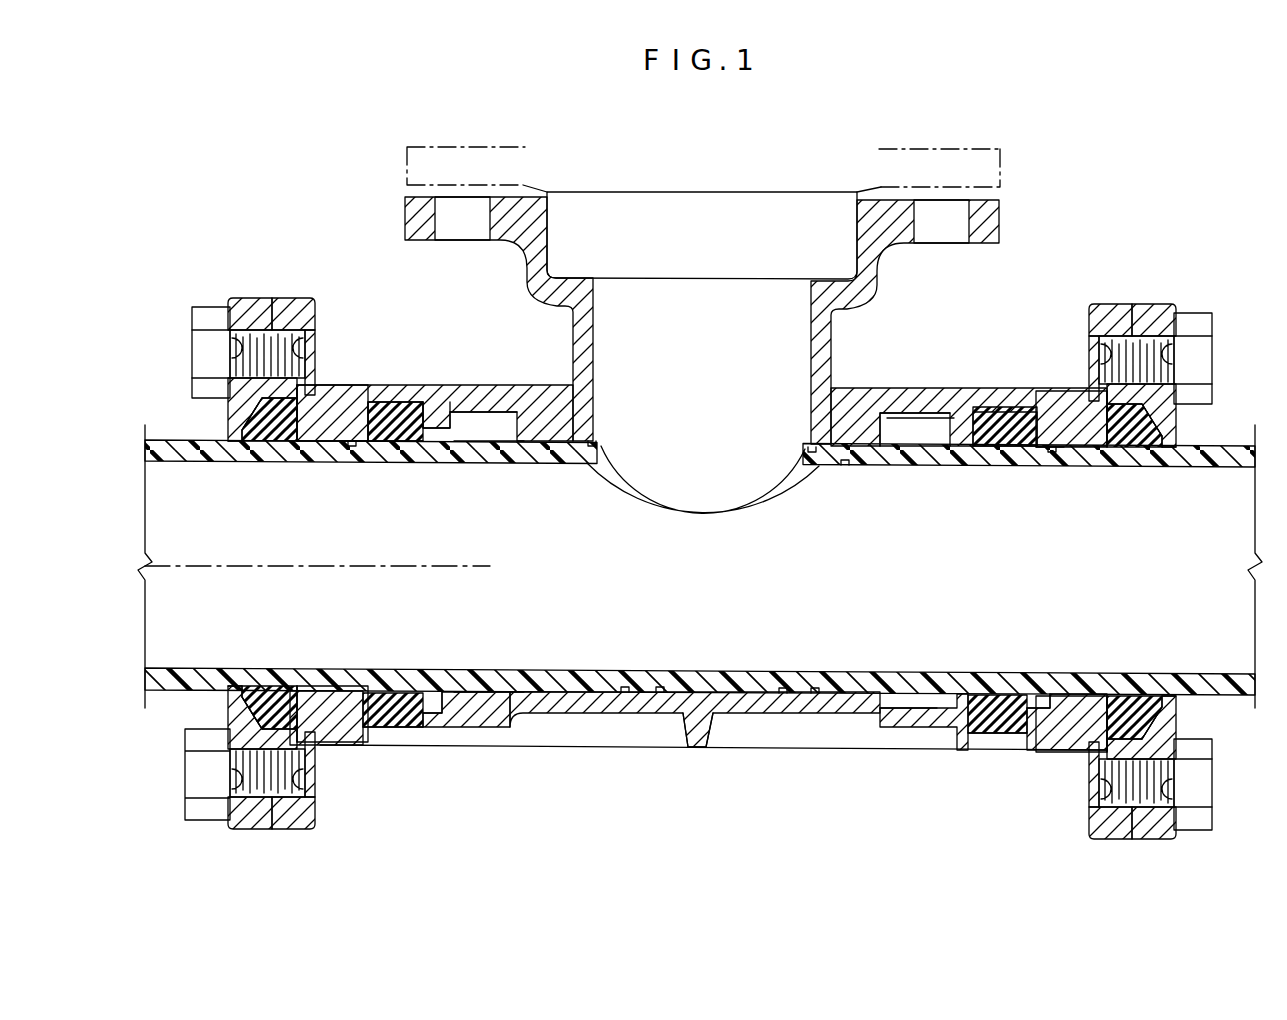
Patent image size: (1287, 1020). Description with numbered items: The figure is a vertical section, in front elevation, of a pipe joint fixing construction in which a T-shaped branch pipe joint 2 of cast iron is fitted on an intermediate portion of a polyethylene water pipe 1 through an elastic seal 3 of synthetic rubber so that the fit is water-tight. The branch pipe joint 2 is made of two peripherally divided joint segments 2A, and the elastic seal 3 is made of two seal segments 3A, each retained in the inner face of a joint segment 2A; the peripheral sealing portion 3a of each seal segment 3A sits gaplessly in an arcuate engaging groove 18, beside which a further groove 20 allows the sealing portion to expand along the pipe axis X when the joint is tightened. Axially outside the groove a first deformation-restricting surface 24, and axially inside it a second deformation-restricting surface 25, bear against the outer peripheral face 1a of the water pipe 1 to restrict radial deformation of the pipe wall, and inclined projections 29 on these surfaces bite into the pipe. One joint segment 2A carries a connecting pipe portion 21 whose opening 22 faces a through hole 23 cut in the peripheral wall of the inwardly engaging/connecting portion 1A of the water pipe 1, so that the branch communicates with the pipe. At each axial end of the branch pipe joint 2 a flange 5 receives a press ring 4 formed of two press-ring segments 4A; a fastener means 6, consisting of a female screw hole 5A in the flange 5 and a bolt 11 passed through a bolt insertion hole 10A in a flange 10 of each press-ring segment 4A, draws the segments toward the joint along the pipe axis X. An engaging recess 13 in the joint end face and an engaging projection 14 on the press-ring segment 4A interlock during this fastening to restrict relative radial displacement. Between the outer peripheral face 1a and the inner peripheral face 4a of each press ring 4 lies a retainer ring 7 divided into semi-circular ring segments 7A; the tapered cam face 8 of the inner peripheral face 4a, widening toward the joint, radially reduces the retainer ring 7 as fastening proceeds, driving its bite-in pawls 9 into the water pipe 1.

The water pipe 1 is at (1245, 446).
The outer peripheral face 1a is at (937, 445).
The inwardly engaging/connecting portion 1A is at (695, 645).
The branch pipe joint 2 is at (702, 545).
The joint segment 2A is at (698, 578).
The elastic seal 3 is at (709, 554).
The seal segment 3A is at (709, 554).
The peripheral sealing portion 3a is at (432, 420).
The press ring 4 is at (711, 543).
The press-ring segment 4A is at (233, 298).
The inner peripheral face 4a is at (258, 450).
The flange 5 is at (702, 551).
The female screw hole 5A is at (308, 340).
The fastener means 6 is at (706, 554).
The retainer ring 7 is at (744, 568).
The ring segment 7A is at (744, 568).
The cam face 8 is at (265, 445).
The bite-in ridges or pawls 9 is at (278, 445).
The flange 10 is at (706, 554).
The bolt insertion hole 10A is at (245, 340).
The bolt 11 is at (190, 386).
The engaging recess 13 is at (287, 440).
The engaging projection 14 is at (318, 395).
The arcuate engaging groove 18 is at (413, 445).
The further groove 20 is at (490, 433).
The connecting pipe portion 21 is at (815, 195).
The opening 22 is at (706, 208).
The through hole 23 is at (710, 510).
The first deformation-restricting surface 24 is at (338, 450).
The second deformation-restricting surface 25 is at (560, 464).
The projection 29 is at (352, 462).
The pipe axis X is at (240, 565).